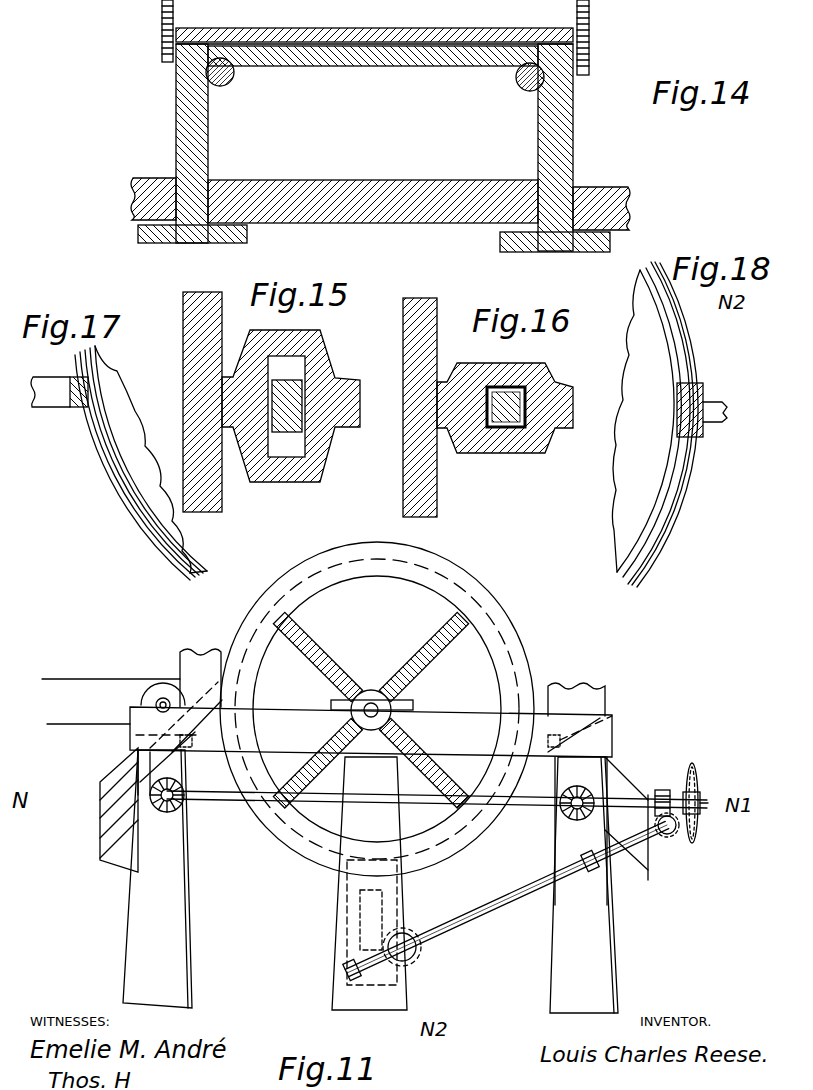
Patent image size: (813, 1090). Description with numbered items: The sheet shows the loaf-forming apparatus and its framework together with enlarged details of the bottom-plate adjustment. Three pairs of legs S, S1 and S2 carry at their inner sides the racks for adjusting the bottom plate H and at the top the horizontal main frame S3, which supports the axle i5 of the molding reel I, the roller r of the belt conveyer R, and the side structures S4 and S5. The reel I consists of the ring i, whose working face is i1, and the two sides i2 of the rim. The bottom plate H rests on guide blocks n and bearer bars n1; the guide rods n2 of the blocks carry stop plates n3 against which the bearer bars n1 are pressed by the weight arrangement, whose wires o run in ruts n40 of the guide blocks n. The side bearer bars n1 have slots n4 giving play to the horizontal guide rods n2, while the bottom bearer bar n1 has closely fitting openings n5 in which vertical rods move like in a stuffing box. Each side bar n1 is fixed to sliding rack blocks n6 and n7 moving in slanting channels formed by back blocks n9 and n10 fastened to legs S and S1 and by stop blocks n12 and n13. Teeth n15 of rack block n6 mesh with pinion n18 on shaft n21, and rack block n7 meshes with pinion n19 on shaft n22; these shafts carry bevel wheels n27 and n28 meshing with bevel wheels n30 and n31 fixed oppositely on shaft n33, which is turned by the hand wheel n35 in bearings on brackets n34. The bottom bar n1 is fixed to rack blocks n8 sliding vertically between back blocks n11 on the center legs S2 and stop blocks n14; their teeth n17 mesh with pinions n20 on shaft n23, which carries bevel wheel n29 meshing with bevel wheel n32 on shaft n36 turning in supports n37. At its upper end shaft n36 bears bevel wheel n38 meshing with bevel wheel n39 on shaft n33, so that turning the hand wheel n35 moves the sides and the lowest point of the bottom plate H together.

In FIG. 14, the bottom plate H is at (428, 31).
In FIG. 17, the bottom plate H is at (108, 440).
In FIG. 18, the bottom plate H is at (658, 484).
In FIG. 14, the sides of the rim i2 is at (162, 15).
In FIG. 11, the sides of the rim i2 is at (297, 572).
In FIG. 14, the guide rods n2 is at (185, 92).
In FIG. 15, the guide rods n2 is at (300, 398).
In FIG. 17, the guide rods n2 is at (48, 397).
In FIG. 16, the guide rods n2 is at (490, 390).
In FIG. 18, the guide rods n2 is at (716, 423).
In FIG. 11, the guide rods n2 is at (205, 746).
In FIG. 14, the guide blocks n is at (357, 62).
In FIG. 17, the guide blocks n is at (72, 417).
In FIG. 18, the guide blocks n is at (700, 400).
In FIG. 11, the guide blocks n is at (252, 759).
In FIG. 14, the ruts n40 is at (235, 84).
In FIG. 14, the wires o is at (221, 87).
In FIG. 17, the wires o is at (125, 510).
In FIG. 18, the wires o is at (700, 484).
In FIG. 14, the bearer bars n1 is at (410, 190).
In FIG. 15, the bearer bars n1 is at (306, 476).
In FIG. 16, the bearer bars n1 is at (545, 448).
In FIG. 11, the bearer bars n1 is at (192, 740).
In FIG. 14, the stop plates n3 is at (150, 240).
In FIG. 11, the stop plates n3 is at (178, 740).
In FIG. 15, the sliding rack blocks n6 is at (190, 338).
In FIG. 11, the sliding rack blocks n6 is at (150, 768).
In FIG. 15, the slots n4 is at (300, 362).
In FIG. 16, the rack blocks n8 is at (405, 435).
In FIG. 11, the rack blocks n8 is at (362, 885).
In FIG. 16, the openings n5 is at (533, 392).
In FIG. 11, the molding reel I is at (450, 570).
In FIG. 11, the ring i is at (403, 578).
In FIG. 11, the face of the ring i1 is at (336, 568).
In FIG. 11, the axle i5 is at (371, 690).
In FIG. 11, the horizontal main frame S3 is at (130, 718).
In FIG. 11, the side structure S5 is at (186, 655).
In FIG. 11, the side structure S4 is at (561, 690).
In FIG. 11, the belt conveyer R is at (88, 679).
In FIG. 11, the roller r is at (160, 698).
In FIG. 11, the sliding rack blocks n7 is at (598, 733).
In FIG. 11, the common shaft n22 is at (585, 790).
In FIG. 11, the back block n10 is at (602, 793).
In FIG. 11, the stop block n13 is at (610, 795).
In FIG. 11, the brackets n34 is at (674, 798).
In FIG. 11, the hand wheel n35 is at (694, 766).
In FIG. 11, the bevel wheel n39 is at (700, 796).
In FIG. 11, the teeth n15 is at (150, 808).
In FIG. 11, the bevel wheel n31 is at (568, 815).
In FIG. 11, the bevel wheel n28 is at (578, 824).
In FIG. 11, the pinion n19 is at (582, 834).
In FIG. 11, the bevel wheel n30 is at (185, 803).
In FIG. 11, the pinion n18 is at (180, 808).
In FIG. 11, the common shaft n21 is at (184, 816).
In FIG. 11, the bevel wheel n27 is at (168, 812).
In FIG. 11, the back block n9 is at (108, 816).
In FIG. 11, the stop block n12 is at (108, 783).
In FIG. 11, the legs S is at (138, 932).
In FIG. 11, the center legs S2 is at (337, 982).
In FIG. 11, the legs S1 is at (605, 948).
In FIG. 11, the stop blocks n14 is at (350, 922).
In FIG. 11, the shaft n33 is at (366, 798).
In FIG. 11, the back blocks n11 is at (371, 860).
In FIG. 11, the teeth n17 is at (386, 912).
In FIG. 11, the bevel wheel n29 is at (402, 934).
In FIG. 11, the shaft n36 is at (522, 898).
In FIG. 11, the supports n37 is at (346, 966).
In FIG. 11, the pinions n20 is at (420, 945).
In FIG. 11, the common shaft n23 is at (420, 955).
In FIG. 11, the bevel wheel n32 is at (408, 968).
In FIG. 11, the bevel wheel n38 is at (674, 832).